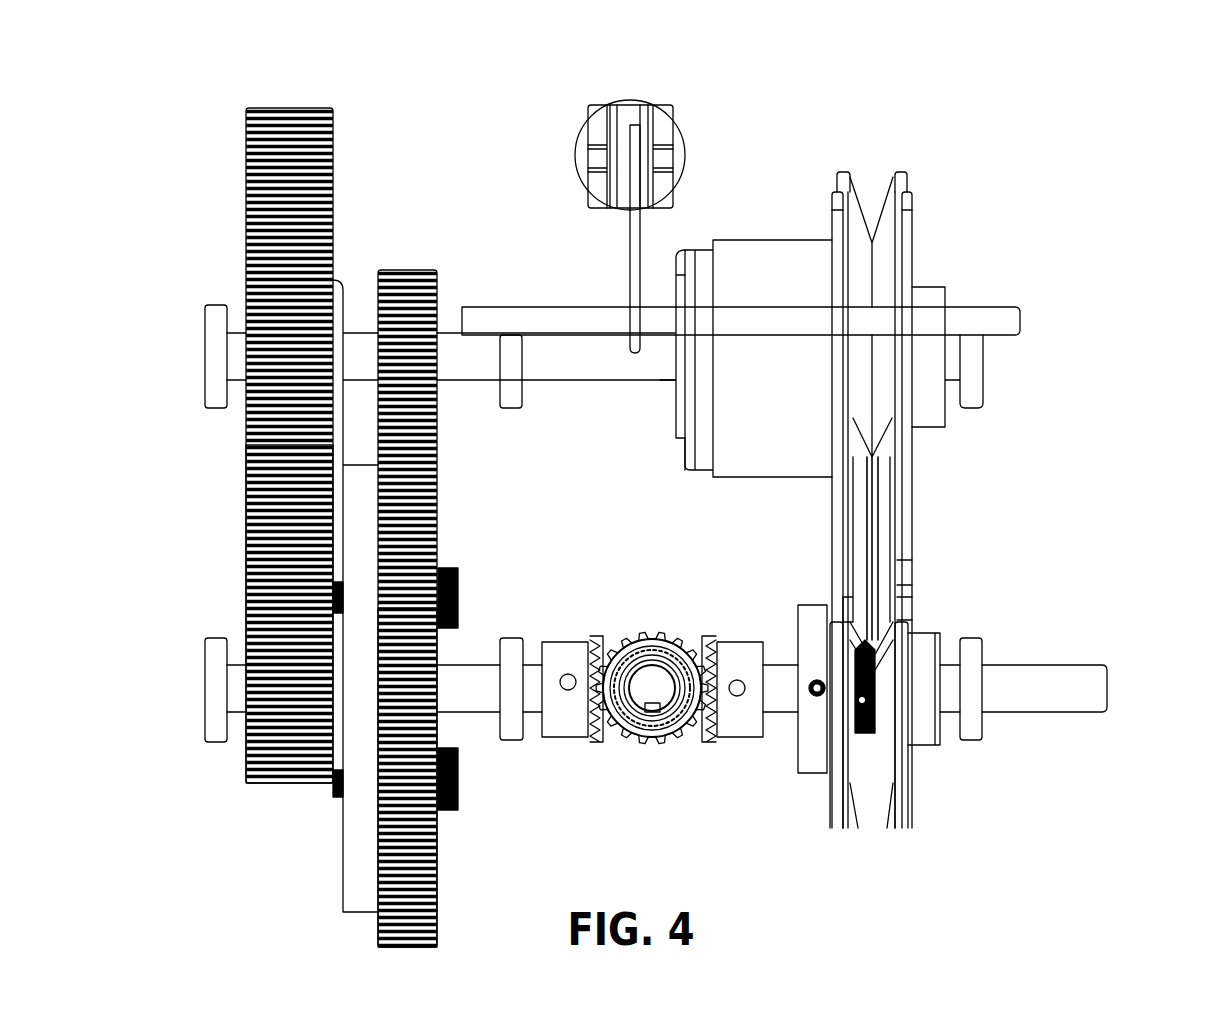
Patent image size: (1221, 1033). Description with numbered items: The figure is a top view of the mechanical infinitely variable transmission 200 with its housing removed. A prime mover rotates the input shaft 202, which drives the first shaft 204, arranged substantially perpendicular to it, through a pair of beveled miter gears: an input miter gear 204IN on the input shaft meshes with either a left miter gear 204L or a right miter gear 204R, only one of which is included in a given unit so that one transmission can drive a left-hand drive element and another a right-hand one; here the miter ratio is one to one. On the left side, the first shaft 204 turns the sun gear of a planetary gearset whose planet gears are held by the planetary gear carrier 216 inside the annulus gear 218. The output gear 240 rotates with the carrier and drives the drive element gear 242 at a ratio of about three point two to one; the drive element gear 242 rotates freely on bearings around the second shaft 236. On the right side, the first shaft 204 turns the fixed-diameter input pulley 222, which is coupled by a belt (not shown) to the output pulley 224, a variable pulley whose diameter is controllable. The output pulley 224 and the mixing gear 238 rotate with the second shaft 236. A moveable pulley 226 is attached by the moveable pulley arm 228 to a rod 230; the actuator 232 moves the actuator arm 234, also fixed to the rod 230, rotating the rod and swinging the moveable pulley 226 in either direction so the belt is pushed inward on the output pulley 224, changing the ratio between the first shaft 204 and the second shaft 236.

The mechanical infinitely variable transmission (IVT) 200 is at (648, 84).
The input shaft 202 is at (650, 678).
The first shaft 204 is at (1022, 697).
The left beveled miter gear 204L is at (590, 730).
The right beveled miter gear 204R is at (704, 742).
The input beveled miter gear 204IN is at (649, 745).
The planetary gear carrier 216 is at (344, 806).
The annulus gear 218 is at (420, 822).
The input pulley 222 is at (878, 775).
The output pulley 224 is at (897, 178).
The moveable pulley 226 is at (900, 540).
The moveable pulley arm 228 is at (908, 460).
The rod 230 is at (542, 305).
The actuator 232 is at (577, 157).
The actuator arm 234 is at (632, 252).
The second shaft 236 is at (540, 367).
The mixing gear 238 is at (420, 288).
The output gear 240 is at (265, 635).
The drive element gear 242 is at (285, 205).